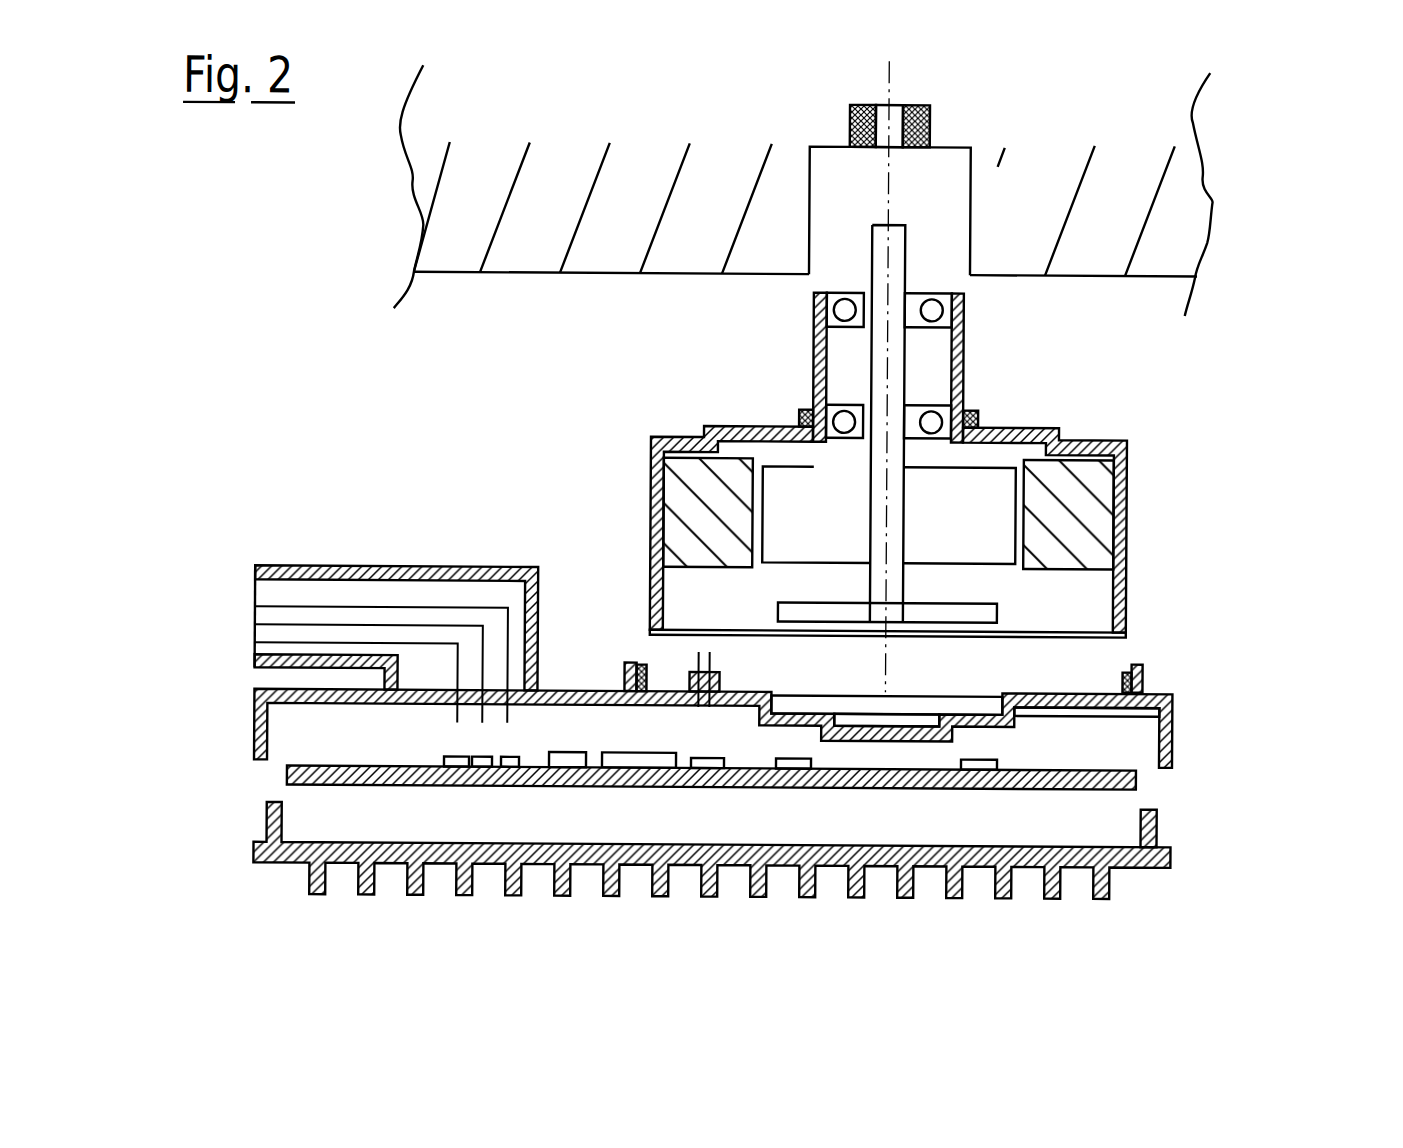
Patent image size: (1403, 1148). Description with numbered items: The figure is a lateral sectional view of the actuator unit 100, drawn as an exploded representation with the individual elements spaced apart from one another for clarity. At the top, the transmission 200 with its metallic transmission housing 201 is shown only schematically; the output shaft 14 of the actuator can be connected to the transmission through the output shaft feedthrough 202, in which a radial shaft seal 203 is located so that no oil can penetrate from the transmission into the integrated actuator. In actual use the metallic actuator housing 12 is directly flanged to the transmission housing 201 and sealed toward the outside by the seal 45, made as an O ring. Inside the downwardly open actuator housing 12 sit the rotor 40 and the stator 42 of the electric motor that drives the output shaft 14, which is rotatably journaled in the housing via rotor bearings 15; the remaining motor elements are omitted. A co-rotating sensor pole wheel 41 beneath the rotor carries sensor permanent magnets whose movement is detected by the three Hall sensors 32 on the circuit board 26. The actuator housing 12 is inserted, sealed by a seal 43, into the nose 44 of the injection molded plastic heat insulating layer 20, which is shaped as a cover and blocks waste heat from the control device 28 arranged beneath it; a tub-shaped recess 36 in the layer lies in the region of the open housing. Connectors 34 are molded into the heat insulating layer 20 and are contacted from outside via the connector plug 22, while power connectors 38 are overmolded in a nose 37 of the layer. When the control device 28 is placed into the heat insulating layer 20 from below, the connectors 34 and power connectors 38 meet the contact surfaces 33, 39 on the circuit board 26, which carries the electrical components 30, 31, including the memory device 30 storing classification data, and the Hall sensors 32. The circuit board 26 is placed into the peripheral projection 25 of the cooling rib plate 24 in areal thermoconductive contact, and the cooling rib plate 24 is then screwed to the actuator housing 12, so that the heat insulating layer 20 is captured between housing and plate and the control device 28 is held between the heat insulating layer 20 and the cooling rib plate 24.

The actuator unit 100 is at (1254, 388).
The transmission 200 is at (393, 186).
The transmission housing 201 is at (570, 278).
The output shaft feedthrough 202 is at (887, 103).
The radial shaft seal 203 is at (858, 103).
The actuator housing 12 is at (1126, 455).
The output shaft 14 is at (903, 351).
The rotor bearings 15 is at (813, 406).
The seal 45 is at (977, 414).
The stator 42 is at (1080, 503).
The rotor 40 is at (1015, 524).
The sensor pole wheel 41 is at (997, 614).
The tub-shaped recess 36 is at (980, 687).
The heat insulating layer 20 is at (1173, 724).
The connector plug 22 is at (325, 568).
The connectors 34 is at (443, 645).
The seal 43 is at (643, 663).
The nose 44 is at (625, 670).
The nose 37 is at (720, 682).
The power connectors 38 is at (712, 658).
The circuit board 26 is at (1108, 790).
The contact surfaces 33 is at (440, 759).
The electrical component 31 is at (562, 767).
The memory device 30 is at (640, 767).
The contact surfaces 39 is at (707, 758).
The Hall sensors 32 is at (788, 767).
The cooling rib plate 24 is at (943, 856).
The peripheral projection 25 is at (1158, 817).
The control device 28 is at (1166, 776).